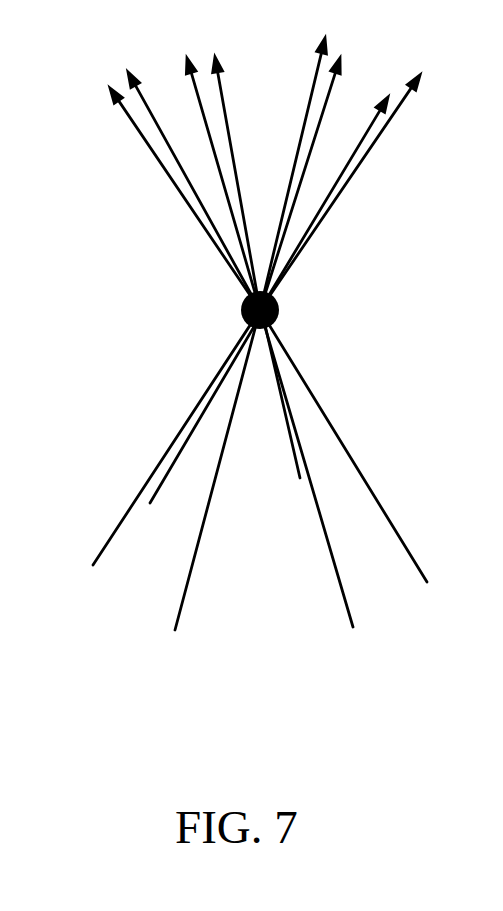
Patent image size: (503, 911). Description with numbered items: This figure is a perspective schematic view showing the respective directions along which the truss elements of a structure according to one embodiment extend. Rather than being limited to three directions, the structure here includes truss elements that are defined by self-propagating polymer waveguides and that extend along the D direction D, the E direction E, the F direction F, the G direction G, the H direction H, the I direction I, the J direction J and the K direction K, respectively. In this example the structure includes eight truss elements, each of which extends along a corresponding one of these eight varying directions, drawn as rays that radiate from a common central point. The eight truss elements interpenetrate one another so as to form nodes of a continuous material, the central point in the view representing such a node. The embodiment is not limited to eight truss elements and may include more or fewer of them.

The D direction D is at (163, 183).
The E direction E is at (183, 167).
The F direction F is at (213, 155).
The G direction G is at (235, 156).
The H direction H is at (294, 155).
The I direction I is at (308, 157).
The J direction J is at (331, 166).
The K direction K is at (356, 171).